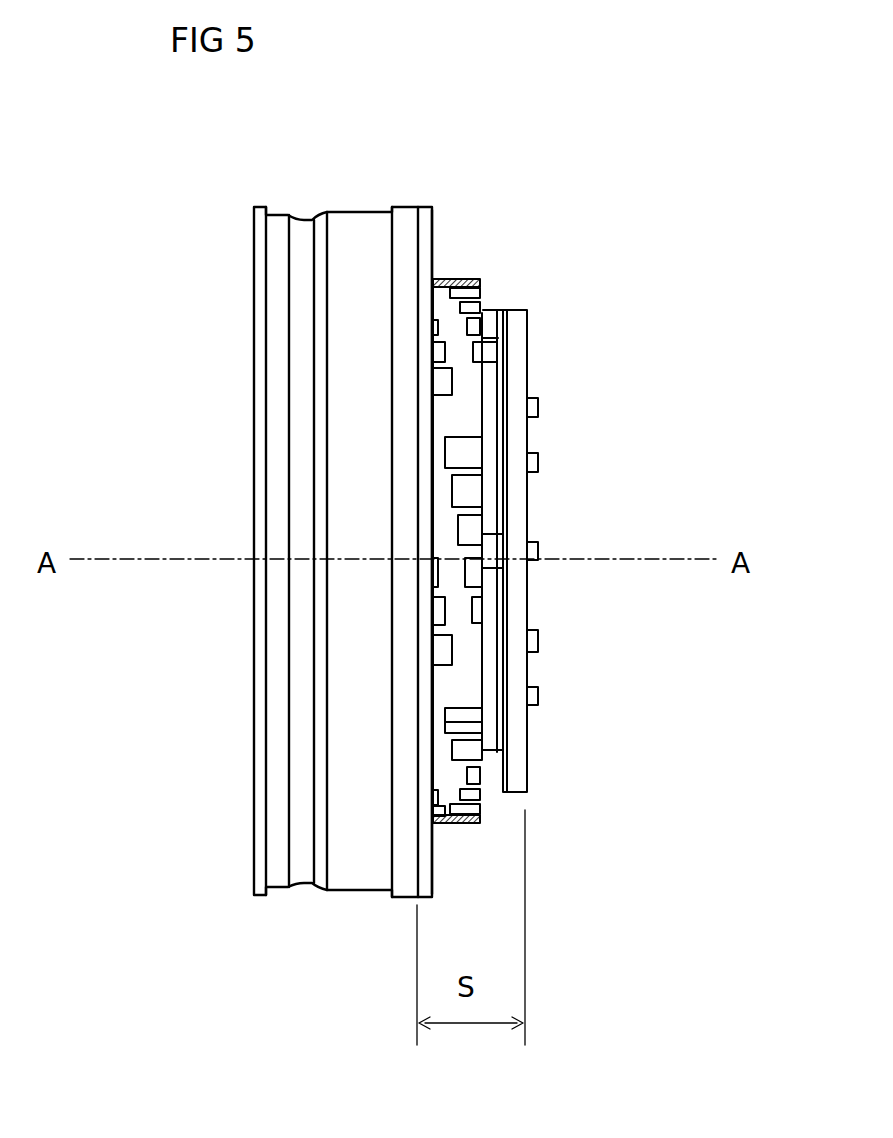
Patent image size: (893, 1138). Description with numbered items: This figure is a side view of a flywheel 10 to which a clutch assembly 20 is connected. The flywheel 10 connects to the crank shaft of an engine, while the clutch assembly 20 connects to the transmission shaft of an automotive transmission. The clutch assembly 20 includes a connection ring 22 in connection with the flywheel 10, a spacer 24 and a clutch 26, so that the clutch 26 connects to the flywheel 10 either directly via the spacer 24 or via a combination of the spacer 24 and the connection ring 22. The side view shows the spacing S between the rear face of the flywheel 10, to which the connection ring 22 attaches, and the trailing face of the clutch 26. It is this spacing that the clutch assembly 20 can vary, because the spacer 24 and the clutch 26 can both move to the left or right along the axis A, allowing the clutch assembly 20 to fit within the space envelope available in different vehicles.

The flywheel 10 is at (277, 655).
The clutch assembly 20 is at (670, 257).
The connection ring 22 is at (432, 235).
The spacer 24 is at (465, 277).
The clutch 26 is at (528, 437).